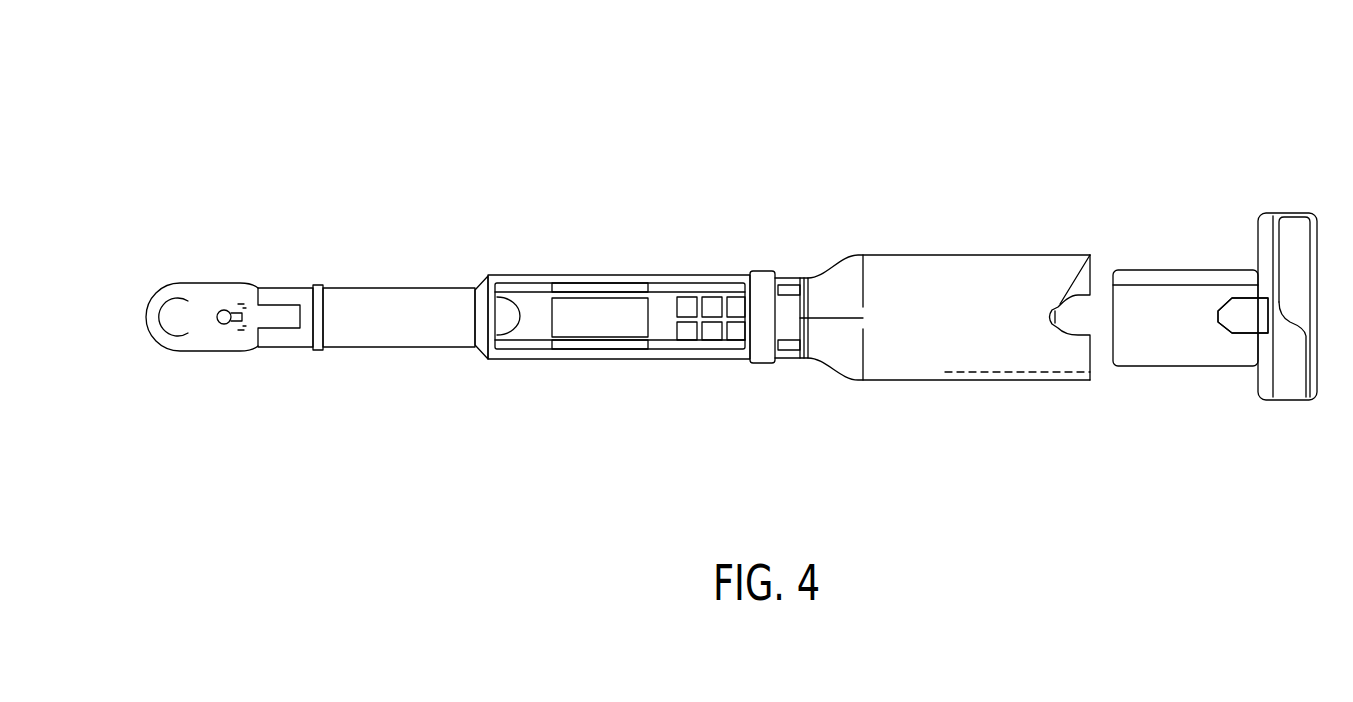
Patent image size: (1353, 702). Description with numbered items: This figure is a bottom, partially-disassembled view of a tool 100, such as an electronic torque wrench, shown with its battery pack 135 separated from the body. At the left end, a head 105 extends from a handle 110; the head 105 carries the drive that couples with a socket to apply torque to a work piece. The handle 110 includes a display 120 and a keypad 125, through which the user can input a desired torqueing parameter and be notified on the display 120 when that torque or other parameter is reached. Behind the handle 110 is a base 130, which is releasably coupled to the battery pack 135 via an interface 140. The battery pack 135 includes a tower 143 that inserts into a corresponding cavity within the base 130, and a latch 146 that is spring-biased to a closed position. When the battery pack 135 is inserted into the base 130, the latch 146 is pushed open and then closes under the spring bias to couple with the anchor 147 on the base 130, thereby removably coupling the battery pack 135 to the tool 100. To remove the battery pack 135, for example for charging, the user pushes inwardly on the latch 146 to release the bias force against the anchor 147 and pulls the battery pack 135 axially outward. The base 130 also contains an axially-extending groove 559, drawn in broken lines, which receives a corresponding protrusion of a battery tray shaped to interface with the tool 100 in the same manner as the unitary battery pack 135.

The tool 100 is at (338, 99).
The head 105 is at (178, 322).
The handle 110 is at (682, 280).
The display 120 is at (583, 318).
The keypad 125 is at (735, 332).
The base 130 is at (891, 276).
The anchor 147 is at (1060, 305).
The groove 559 is at (1050, 378).
The tower 143 is at (1140, 271).
The latch 146 is at (1240, 310).
The interface 140 is at (1232, 344).
The battery pack 135 is at (1292, 200).